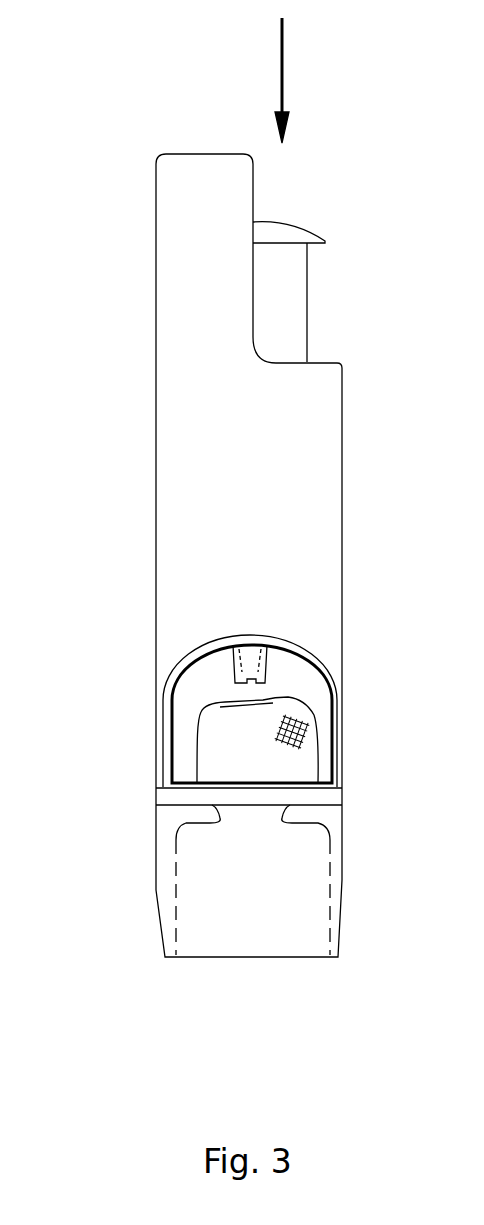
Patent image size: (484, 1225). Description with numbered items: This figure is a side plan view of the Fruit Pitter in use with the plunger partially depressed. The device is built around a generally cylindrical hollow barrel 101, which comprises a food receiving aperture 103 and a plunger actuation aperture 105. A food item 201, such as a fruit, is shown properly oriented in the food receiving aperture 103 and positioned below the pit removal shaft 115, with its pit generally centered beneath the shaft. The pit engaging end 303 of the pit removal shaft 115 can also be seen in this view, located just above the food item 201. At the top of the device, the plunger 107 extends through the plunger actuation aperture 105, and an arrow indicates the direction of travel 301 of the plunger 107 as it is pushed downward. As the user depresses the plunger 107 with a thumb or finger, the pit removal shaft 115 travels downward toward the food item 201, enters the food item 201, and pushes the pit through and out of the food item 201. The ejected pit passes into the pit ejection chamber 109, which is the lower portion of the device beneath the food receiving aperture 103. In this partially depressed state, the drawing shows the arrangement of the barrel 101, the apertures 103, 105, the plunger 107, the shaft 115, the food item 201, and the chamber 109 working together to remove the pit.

The direction of travel 301 is at (288, 62).
The generally cylindrical hollow barrel 101 is at (318, 487).
The plunger actuation aperture 105 is at (330, 360).
The plunger 107 is at (303, 230).
The food receiving aperture 103 is at (188, 730).
The pit removal shaft 115 is at (262, 663).
The pit engaging end 303 is at (233, 673).
The food item 201 is at (310, 720).
The pit ejection chamber 109 is at (343, 877).